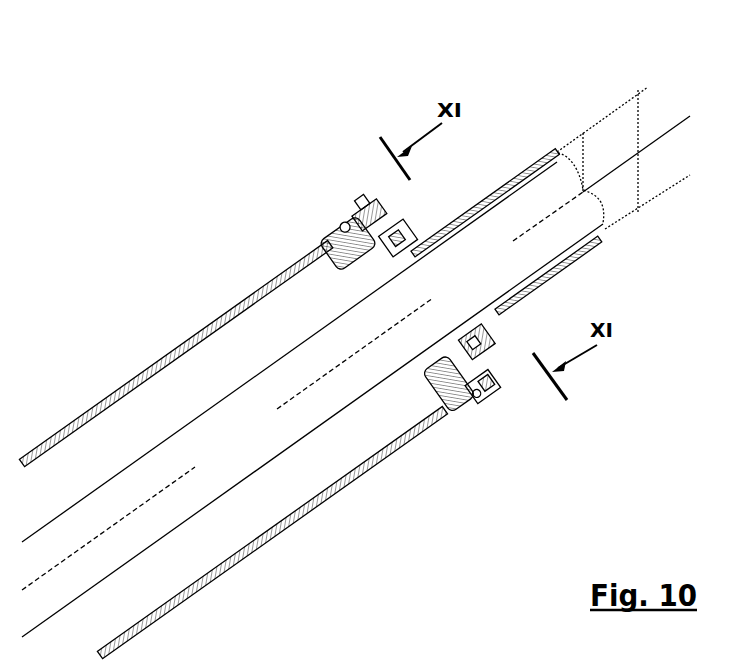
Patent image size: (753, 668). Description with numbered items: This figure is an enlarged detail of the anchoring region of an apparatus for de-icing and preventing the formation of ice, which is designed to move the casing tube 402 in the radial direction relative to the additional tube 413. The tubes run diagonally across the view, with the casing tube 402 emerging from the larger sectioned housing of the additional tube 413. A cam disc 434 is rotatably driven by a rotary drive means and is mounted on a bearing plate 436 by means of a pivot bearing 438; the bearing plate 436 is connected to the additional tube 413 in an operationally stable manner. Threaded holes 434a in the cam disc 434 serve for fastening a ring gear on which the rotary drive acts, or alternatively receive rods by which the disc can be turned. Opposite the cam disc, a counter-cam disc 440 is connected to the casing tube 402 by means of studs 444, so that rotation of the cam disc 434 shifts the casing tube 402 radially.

The casing tube 402 is at (613, 125).
The additional tube 413 is at (337, 490).
The cam disc 434 is at (363, 212).
The threaded holes 434a is at (360, 210).
The bearing plate 436 is at (350, 248).
The pivot bearing 438 is at (475, 405).
The counter-cam disc 440 is at (458, 373).
The studs 444 is at (488, 350).